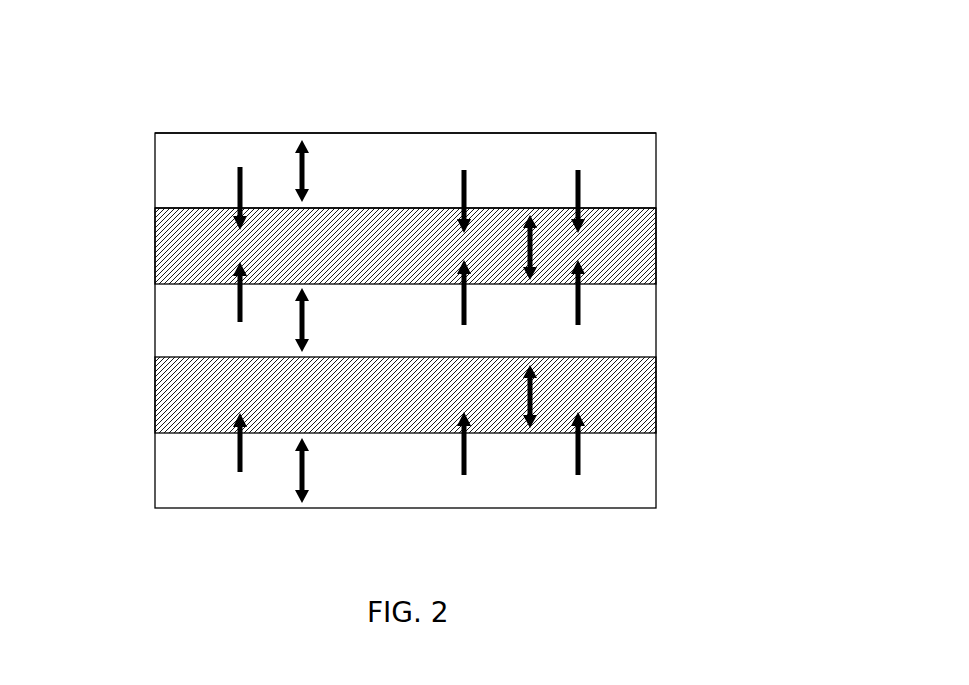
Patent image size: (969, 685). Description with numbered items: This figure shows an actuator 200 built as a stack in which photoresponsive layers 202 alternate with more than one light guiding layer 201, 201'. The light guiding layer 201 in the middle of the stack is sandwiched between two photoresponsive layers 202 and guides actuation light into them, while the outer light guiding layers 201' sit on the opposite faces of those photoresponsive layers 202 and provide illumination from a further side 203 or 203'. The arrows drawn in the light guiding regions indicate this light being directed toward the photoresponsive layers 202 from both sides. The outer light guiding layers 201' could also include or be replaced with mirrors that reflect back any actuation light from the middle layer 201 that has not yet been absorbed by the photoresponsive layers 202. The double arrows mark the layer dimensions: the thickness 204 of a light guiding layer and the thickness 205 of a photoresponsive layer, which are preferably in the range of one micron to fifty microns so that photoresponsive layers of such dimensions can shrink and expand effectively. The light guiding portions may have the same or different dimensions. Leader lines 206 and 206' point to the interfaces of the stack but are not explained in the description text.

The actuator 200 is at (165, 74).
The light guiding layer 201 is at (521, 403).
The light guiding layer 201' is at (521, 196).
The photoresponsive layer 202 is at (643, 243).
The further side 203 is at (137, 366).
The further side 203' is at (137, 195).
The thickness of light guiding layer 204 is at (308, 170).
The thickness of photoresponsive layer 205 is at (535, 250).
The stack axis 206 is at (500, 67).
The layer interface 206' is at (405, 147).